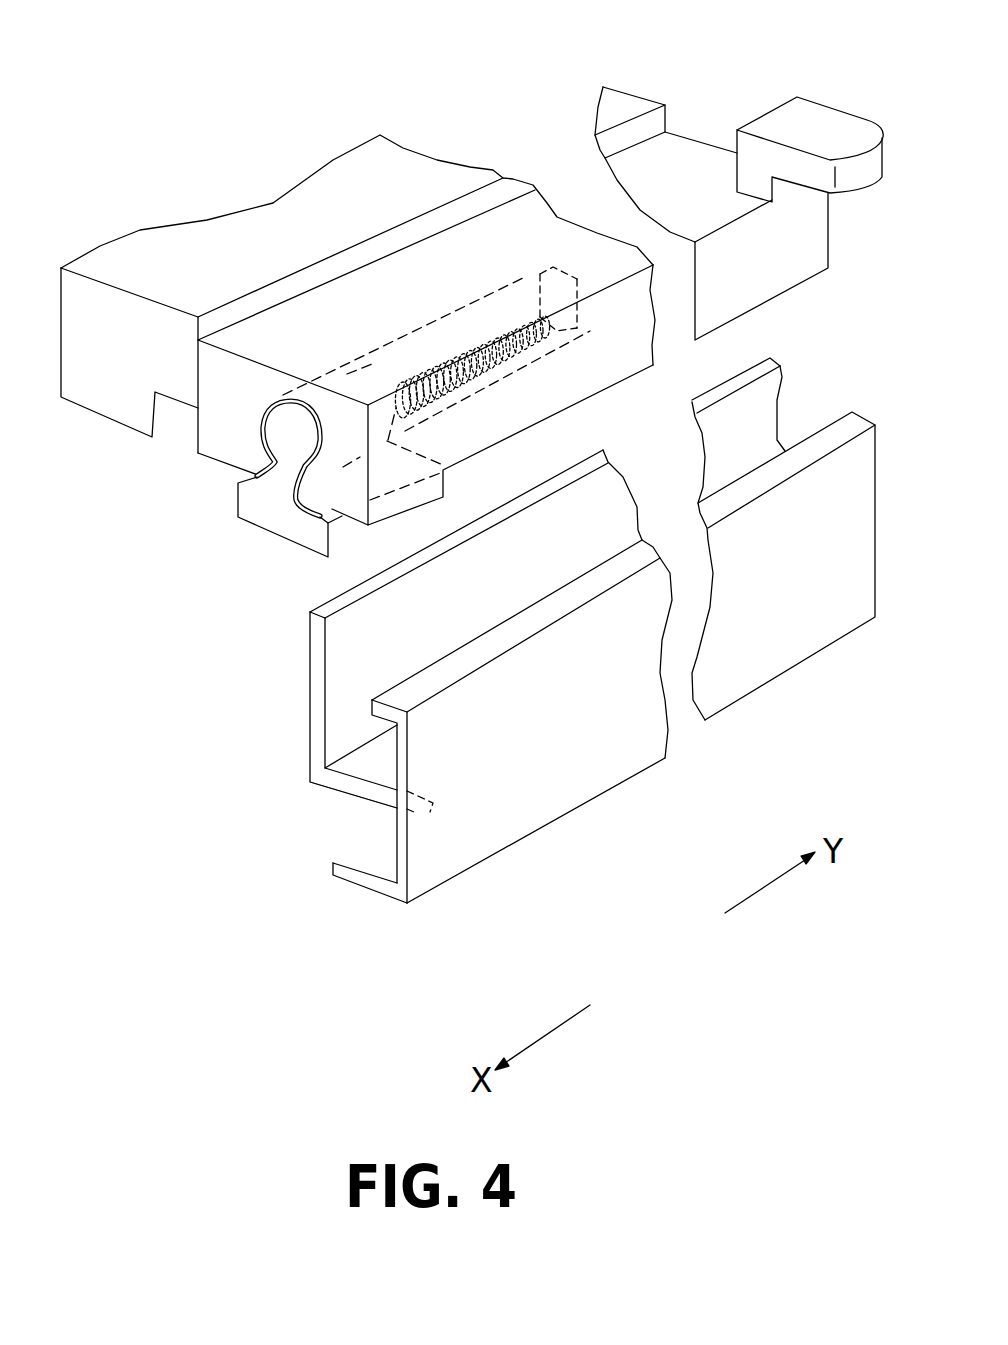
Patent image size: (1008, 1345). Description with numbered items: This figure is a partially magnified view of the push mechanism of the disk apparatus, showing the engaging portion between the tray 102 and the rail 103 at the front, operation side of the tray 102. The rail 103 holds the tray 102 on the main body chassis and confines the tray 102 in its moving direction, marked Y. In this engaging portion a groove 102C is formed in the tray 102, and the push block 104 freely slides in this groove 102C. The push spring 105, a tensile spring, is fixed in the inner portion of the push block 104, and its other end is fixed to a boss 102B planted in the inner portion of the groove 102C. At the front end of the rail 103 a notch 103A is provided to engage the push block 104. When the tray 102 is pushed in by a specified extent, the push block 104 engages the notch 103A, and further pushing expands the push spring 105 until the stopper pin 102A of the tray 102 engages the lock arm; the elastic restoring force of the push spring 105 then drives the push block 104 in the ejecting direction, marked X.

The tray 102 is at (350, 160).
The stopper pin 102A is at (838, 108).
The boss 102B is at (548, 267).
The groove 102C is at (250, 438).
The rail 103 is at (573, 800).
The notch 103A is at (313, 822).
The push block 104 is at (278, 537).
The push spring 105 is at (467, 338).